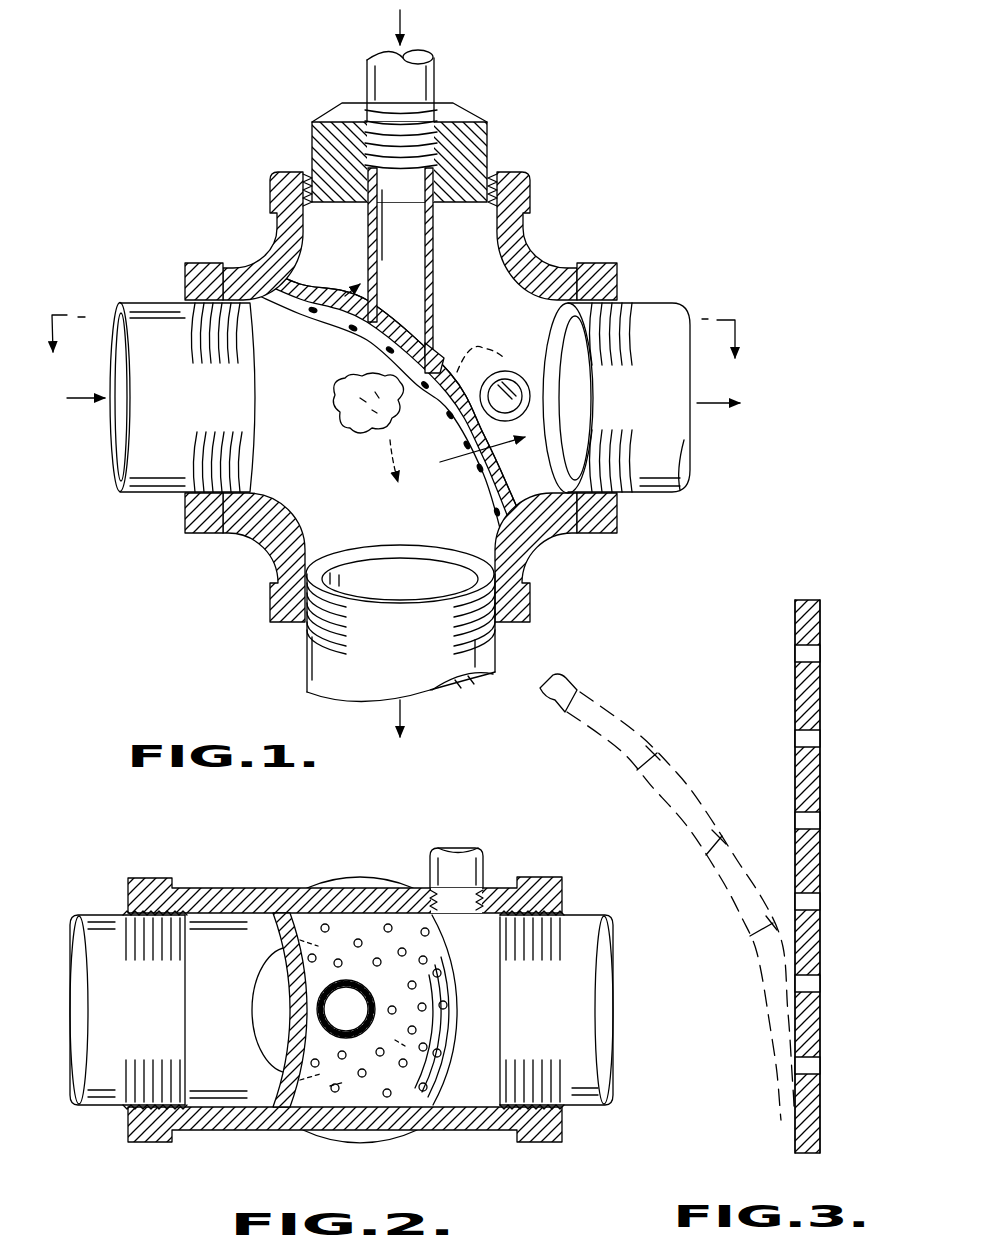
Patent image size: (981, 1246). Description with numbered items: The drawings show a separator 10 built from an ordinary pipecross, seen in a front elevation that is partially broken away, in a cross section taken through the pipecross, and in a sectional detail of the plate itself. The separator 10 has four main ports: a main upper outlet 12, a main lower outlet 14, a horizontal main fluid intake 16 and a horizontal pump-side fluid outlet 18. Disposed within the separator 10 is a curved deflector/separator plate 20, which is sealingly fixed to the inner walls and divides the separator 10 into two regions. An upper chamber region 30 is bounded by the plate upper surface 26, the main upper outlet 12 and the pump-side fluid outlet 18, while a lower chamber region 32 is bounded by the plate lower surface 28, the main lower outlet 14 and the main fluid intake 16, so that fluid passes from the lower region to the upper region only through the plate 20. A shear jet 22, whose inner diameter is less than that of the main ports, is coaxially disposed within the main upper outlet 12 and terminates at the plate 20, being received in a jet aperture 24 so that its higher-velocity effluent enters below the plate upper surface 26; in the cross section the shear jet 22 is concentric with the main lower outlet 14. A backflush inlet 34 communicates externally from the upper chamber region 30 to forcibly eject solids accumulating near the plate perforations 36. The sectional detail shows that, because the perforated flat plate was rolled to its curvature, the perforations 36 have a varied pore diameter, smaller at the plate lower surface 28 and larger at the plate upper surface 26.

In FIG. 1, the separator 10 is at (393, 373).
In FIG. 2, the separator 10 is at (358, 969).
In FIG. 1, the main upper outlet 12 is at (467, 222).
In FIG. 2, the main upper outlet 12 is at (345, 1010).
In FIG. 1, the main lower outlet 14 is at (310, 567).
In FIG. 2, the main lower outlet 14 is at (282, 1015).
In FIG. 1, the horizontal, main fluid intake 16 is at (205, 405).
In FIG. 2, the horizontal, main fluid intake 16 is at (130, 1033).
In FIG. 1, the horizontal, pump-side fluid outlet 18 is at (605, 362).
In FIG. 2, the horizontal, pump-side fluid outlet 18 is at (588, 1007).
In FIG. 1, the deflector/separator plate 20 is at (386, 389).
In FIG. 2, the deflector/separator plate 20 is at (384, 973).
In FIG. 3, the deflector/separator plate 20 is at (704, 874).
In FIG. 1, the shear jet 22 is at (410, 267).
In FIG. 2, the shear jet 22 is at (369, 1008).
In FIG. 1, the jet aperture 24 is at (375, 352).
In FIG. 1, the plate upper surface 26 is at (322, 283).
In FIG. 3, the plate upper surface 26 is at (820, 622).
In FIG. 1, the plate lower surface 28 is at (338, 324).
In FIG. 3, the plate lower surface 28 is at (793, 612).
In FIG. 1, the upper chamber region 30 is at (476, 311).
In FIG. 1, the lower chamber region 32 is at (300, 463).
In FIG. 1, the backflush inlet 34 is at (505, 380).
In FIG. 2, the backflush inlet 34 is at (458, 850).
In FIG. 1, the plate perforations 36 is at (490, 490).
In FIG. 2, the plate perforations 36 is at (427, 1006).
In FIG. 3, the plate perforations 36 is at (795, 655).